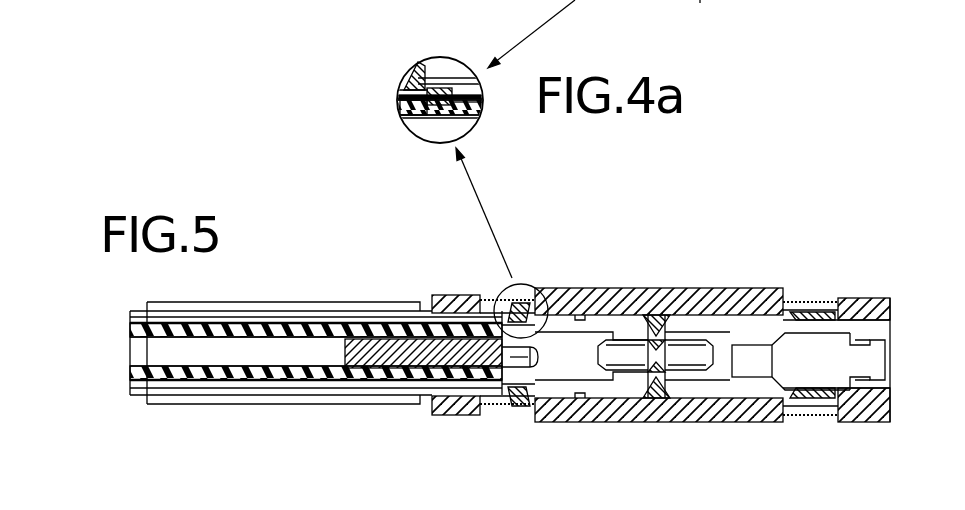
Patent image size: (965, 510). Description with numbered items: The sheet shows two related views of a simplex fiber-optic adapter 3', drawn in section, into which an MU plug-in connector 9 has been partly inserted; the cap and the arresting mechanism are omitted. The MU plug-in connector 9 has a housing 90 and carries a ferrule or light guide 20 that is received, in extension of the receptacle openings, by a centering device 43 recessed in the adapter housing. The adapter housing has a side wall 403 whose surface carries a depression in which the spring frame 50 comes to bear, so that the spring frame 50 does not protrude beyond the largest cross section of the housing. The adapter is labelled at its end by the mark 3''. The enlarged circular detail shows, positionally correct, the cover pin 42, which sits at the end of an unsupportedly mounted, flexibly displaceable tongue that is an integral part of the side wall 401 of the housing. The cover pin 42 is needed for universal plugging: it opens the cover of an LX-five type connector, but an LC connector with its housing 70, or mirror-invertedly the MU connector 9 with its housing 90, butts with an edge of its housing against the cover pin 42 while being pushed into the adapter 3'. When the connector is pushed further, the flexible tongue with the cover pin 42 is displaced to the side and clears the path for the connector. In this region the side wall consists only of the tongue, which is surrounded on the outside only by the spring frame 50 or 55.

In FIG. 4A, the connector end 3'' is at (702, 16).
In FIG. 4A, the housing of the LC connector 70 is at (417, 68).
In FIG. 4A, the cover pin 42 is at (440, 86).
In FIG. 4A, the side wall 401 is at (406, 104).
In FIG. 4A, the spring frame 55 is at (458, 110).
In FIG. 5, the MU plug-in connector 9 is at (116, 347).
In FIG. 5, the housing of the MU connector 90 is at (396, 369).
In FIG. 5, the ferrule or light guide 20 is at (510, 384).
In FIG. 5, the spring frame 50 is at (531, 407).
In FIG. 5, the side wall 403 is at (589, 408).
In FIG. 5, the centering device 43 is at (693, 367).
In FIG. 5, the adapter 3' is at (841, 360).